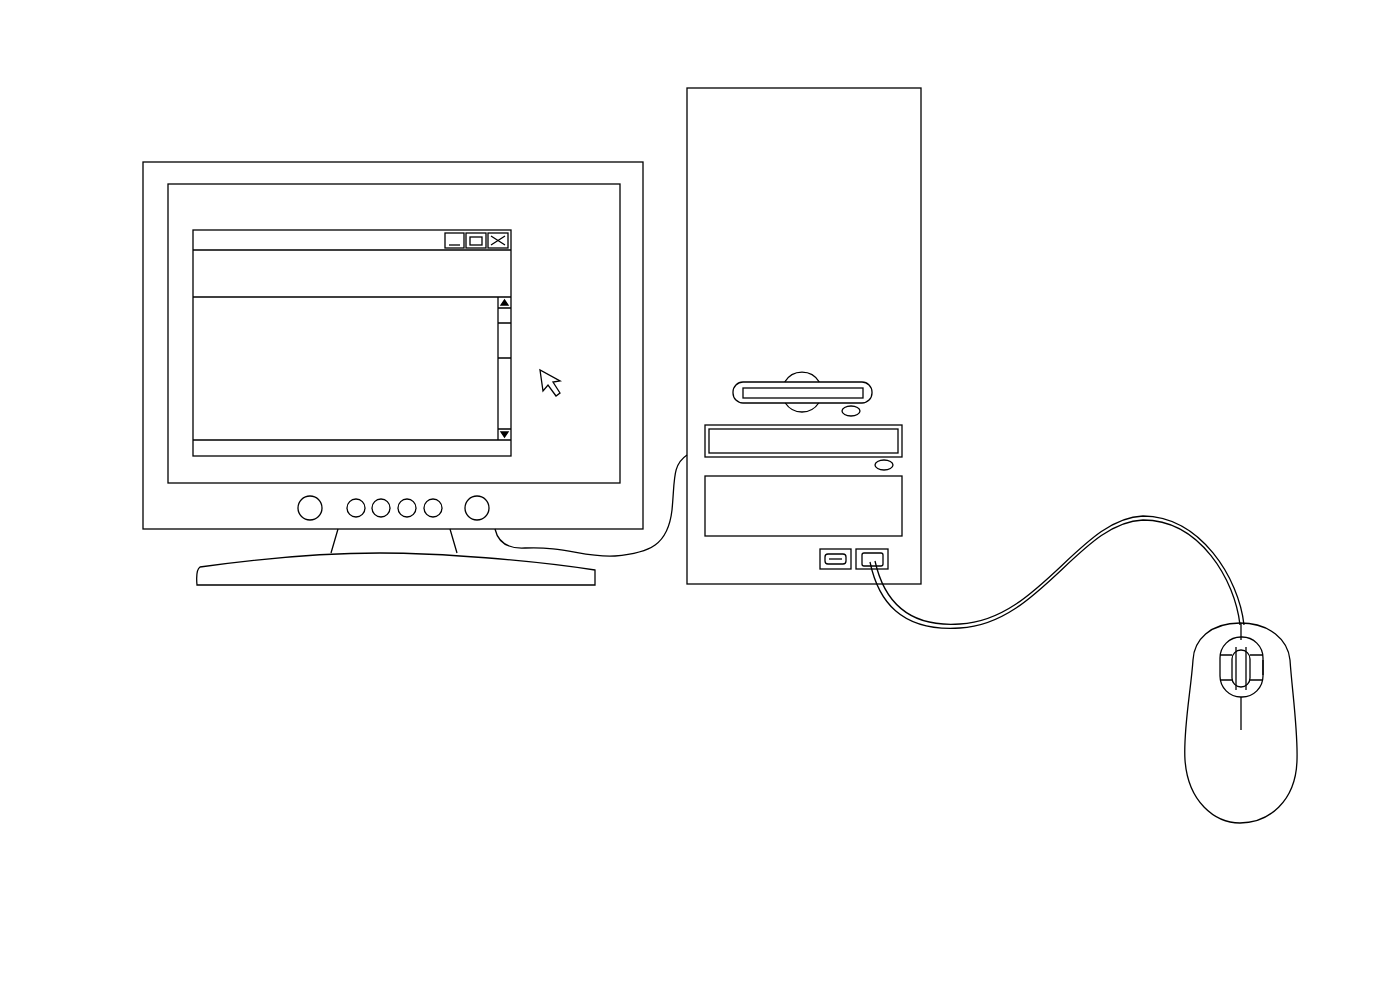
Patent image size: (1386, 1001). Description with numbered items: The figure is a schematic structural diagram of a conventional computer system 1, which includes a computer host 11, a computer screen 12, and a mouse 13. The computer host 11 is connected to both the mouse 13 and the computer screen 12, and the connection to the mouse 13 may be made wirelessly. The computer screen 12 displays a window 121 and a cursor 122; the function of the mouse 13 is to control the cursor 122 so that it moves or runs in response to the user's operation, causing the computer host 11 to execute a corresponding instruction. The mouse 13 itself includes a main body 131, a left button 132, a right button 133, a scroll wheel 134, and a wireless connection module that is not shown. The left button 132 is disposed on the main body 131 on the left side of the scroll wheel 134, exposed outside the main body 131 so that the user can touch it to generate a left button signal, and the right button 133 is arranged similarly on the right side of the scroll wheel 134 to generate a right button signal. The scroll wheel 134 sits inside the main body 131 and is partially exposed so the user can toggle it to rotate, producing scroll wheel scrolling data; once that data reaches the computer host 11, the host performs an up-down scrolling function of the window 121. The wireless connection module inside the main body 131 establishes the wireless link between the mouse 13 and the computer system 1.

The computer system 1 is at (715, 62).
The computer host 11 is at (809, 92).
The computer screen 12 is at (523, 158).
The window 121 is at (330, 275).
The cursor 122 is at (557, 387).
The mouse 13 is at (1172, 660).
The main body 131 is at (1270, 745).
The left button 132 is at (1205, 668).
The right button 133 is at (1272, 665).
The scroll wheel 134 is at (1235, 647).